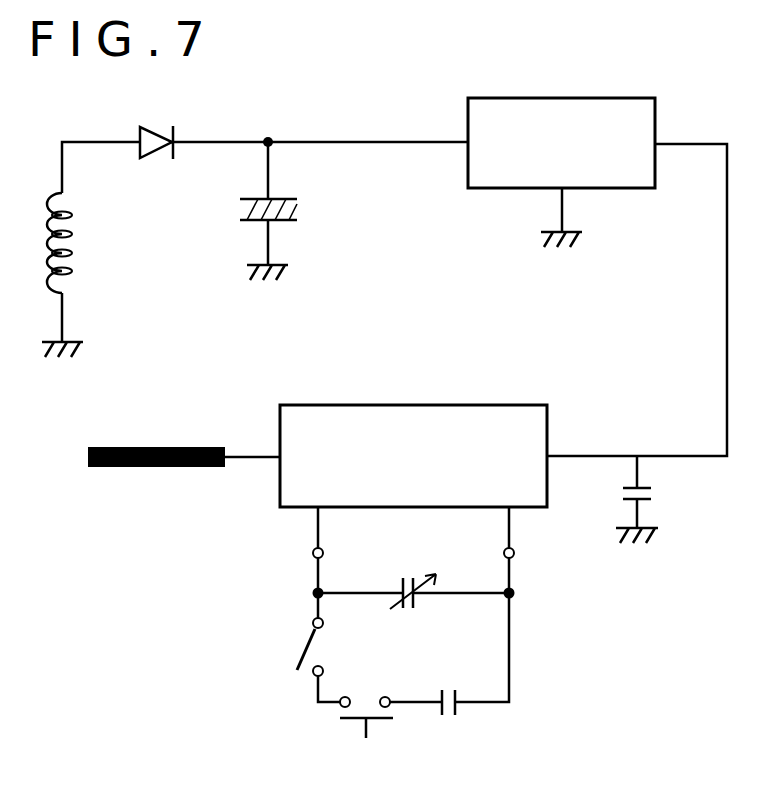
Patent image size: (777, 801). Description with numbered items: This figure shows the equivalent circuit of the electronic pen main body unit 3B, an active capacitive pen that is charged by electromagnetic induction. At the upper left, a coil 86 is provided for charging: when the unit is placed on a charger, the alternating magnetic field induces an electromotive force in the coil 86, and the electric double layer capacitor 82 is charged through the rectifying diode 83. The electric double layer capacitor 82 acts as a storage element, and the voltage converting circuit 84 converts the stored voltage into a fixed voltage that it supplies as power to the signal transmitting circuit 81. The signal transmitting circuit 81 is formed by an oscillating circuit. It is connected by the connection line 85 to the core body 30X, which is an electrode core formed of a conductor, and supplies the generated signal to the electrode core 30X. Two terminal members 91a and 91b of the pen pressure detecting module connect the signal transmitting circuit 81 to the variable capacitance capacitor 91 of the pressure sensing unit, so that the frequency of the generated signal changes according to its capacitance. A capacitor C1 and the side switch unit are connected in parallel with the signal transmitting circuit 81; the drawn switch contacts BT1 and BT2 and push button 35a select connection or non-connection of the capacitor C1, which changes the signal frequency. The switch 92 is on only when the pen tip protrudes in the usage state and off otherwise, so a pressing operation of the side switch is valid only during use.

The electronic pen main body unit 3B is at (247, 122).
The rectifying diode 83 is at (158, 151).
The electric double layer capacitor 82 is at (297, 213).
The coil 86 is at (75, 233).
The voltage converting circuit 84 is at (620, 189).
The connection line 85 is at (248, 453).
The signal transmitting circuit 81 is at (477, 403).
The core body (electrode core) 30X is at (141, 468).
The terminal member 91a is at (312, 553).
The terminal member 91b is at (516, 553).
The variable capacitance capacitor 91 is at (408, 573).
The switch 92 is at (302, 642).
The button terminal BT1 is at (345, 693).
The button terminal BT2 is at (388, 692).
The push button 35a is at (350, 730).
The capacitor C1 is at (447, 716).